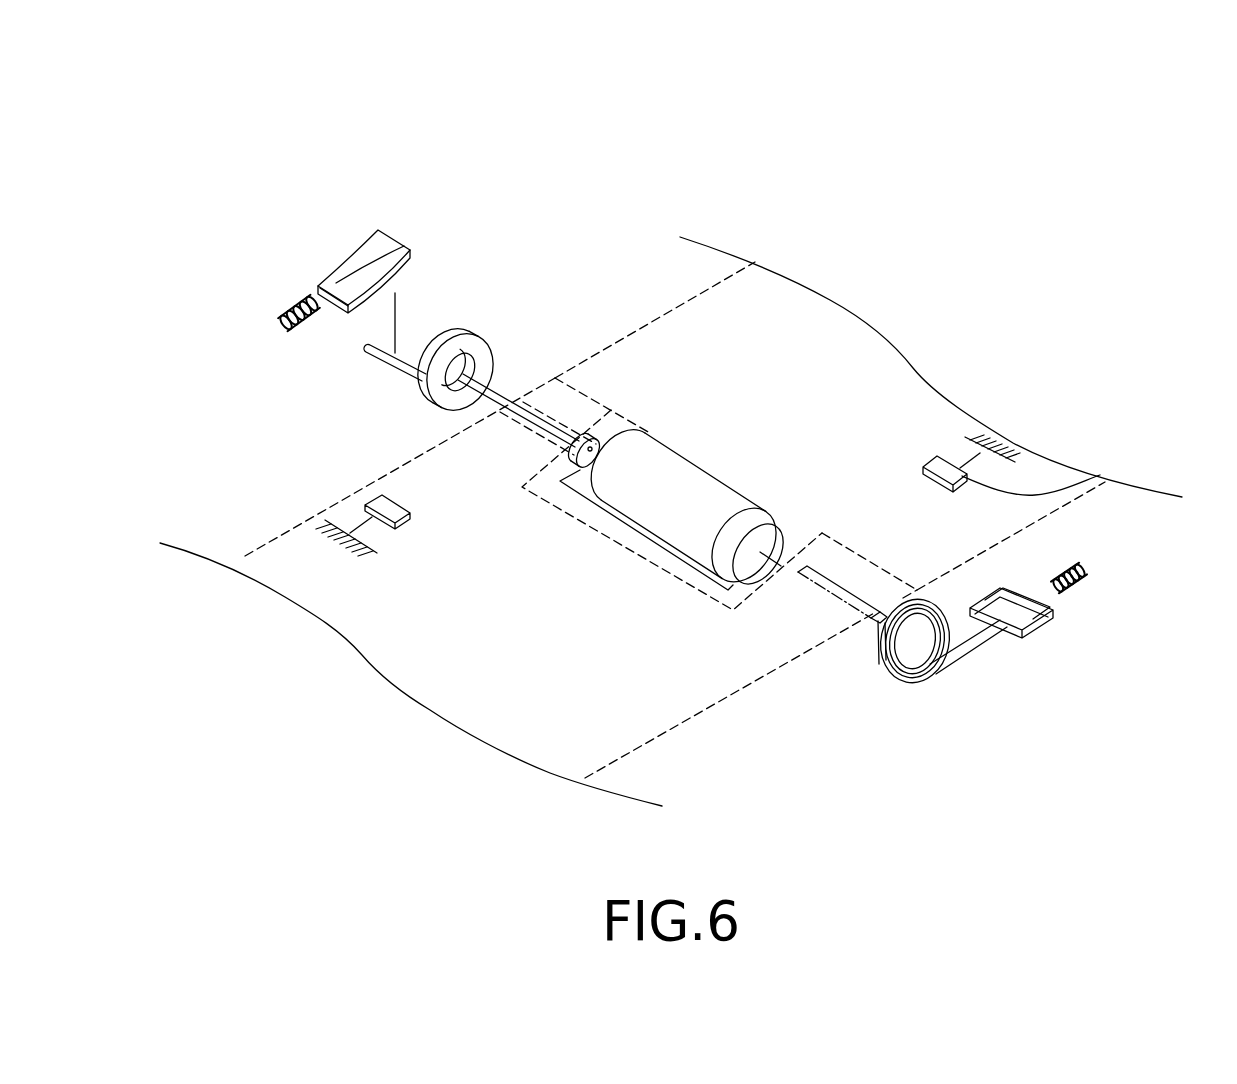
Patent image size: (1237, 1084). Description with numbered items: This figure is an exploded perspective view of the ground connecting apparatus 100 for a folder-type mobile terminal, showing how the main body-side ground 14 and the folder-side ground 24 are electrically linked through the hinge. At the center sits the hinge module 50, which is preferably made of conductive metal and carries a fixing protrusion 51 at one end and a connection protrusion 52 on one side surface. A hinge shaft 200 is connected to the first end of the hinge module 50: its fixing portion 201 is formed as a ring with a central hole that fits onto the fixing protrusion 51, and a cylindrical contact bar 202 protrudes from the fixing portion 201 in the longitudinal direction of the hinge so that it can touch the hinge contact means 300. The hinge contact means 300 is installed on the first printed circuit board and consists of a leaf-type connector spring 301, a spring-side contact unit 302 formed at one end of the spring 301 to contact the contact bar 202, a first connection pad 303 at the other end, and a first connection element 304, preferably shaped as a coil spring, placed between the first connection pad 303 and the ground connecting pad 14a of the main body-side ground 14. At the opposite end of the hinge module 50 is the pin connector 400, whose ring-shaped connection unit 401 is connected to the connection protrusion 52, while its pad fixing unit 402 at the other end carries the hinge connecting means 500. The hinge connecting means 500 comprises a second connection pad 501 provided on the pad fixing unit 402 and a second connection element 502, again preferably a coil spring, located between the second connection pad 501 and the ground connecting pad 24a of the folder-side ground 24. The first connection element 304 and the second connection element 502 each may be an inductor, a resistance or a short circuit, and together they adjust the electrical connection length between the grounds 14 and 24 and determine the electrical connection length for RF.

The hinge device 100 is at (681, 184).
The main body-side ground 14 is at (527, 733).
The ground connecting pad 14a is at (395, 528).
The folder-side ground 24 is at (777, 285).
The ground connecting pad 24a is at (1100, 475).
The hinge module 50 is at (702, 471).
The fixing protrusion 51 is at (604, 437).
The connection protrusion 52 is at (765, 512).
The hinge shaft 200 is at (280, 380).
The fixing portion 201 is at (424, 397).
The contact bar 202 is at (387, 356).
The hinge contact means 300 is at (233, 178).
The leaf-type connector spring 301 is at (338, 286).
The spring-side contact unit 302 is at (364, 277).
The first connection pad 303 is at (340, 287).
The first connection element 304 is at (296, 302).
The pin connector 400 is at (1050, 740).
The connection unit 401 is at (910, 683).
The pad fixing unit 402 is at (1010, 622).
The hinge connecting means 500 is at (1165, 578).
The second connection pad 501 is at (1047, 611).
The second connection element 502 is at (1083, 577).